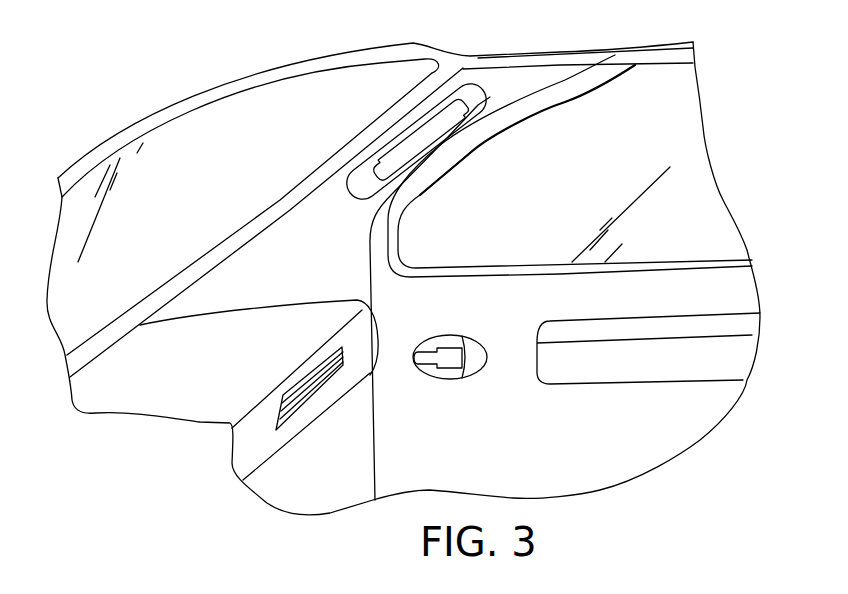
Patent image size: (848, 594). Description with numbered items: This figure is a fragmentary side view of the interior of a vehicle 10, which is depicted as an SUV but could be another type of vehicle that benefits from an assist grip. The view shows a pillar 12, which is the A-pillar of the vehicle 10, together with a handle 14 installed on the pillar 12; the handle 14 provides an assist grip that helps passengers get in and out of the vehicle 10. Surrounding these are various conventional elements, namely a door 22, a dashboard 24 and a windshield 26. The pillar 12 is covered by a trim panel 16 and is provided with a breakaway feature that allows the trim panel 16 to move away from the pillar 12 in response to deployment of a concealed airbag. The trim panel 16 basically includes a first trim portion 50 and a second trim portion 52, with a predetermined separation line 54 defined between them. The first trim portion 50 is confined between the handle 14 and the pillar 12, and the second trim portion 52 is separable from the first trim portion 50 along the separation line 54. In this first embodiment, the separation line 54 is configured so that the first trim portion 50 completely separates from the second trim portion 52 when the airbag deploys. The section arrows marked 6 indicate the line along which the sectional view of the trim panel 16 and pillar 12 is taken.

The vehicle 10 is at (116, 90).
The pillar 12 is at (250, 213).
The handle 14 is at (453, 128).
The trim panel 16 is at (520, 85).
The door 22 is at (708, 295).
The dashboard 24 is at (257, 442).
The windshield 26 is at (228, 126).
The first trim portion 50 is at (497, 95).
The second trim portion 52 is at (433, 127).
The predetermined separation line 54 is at (408, 128).
The section line 6- 6 is at (373, 112).